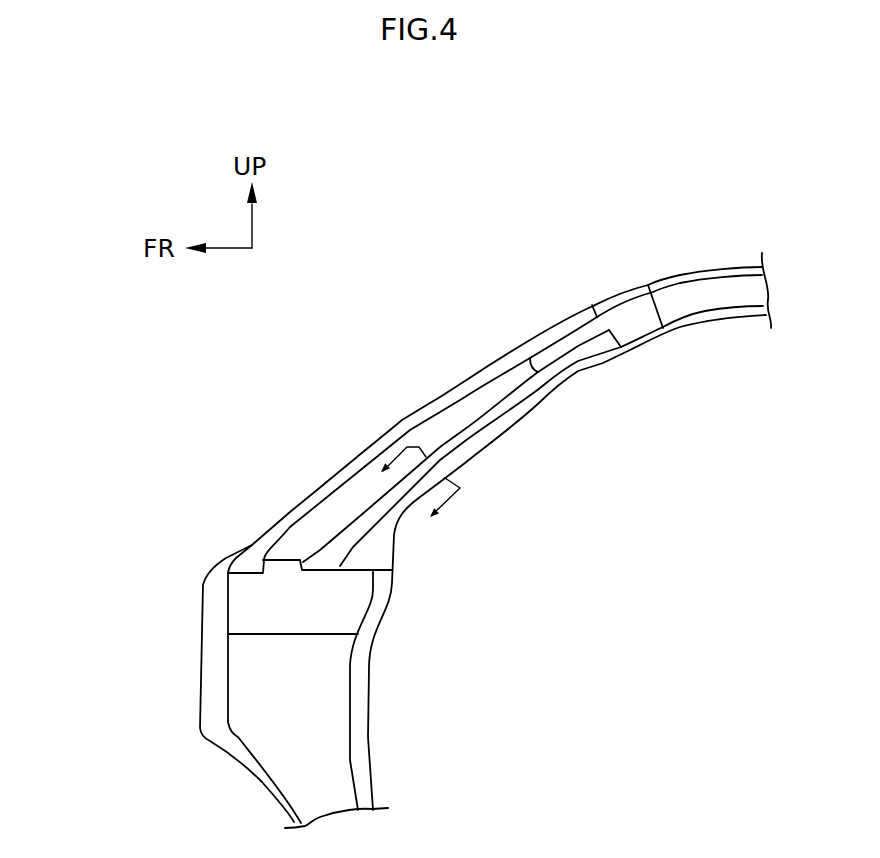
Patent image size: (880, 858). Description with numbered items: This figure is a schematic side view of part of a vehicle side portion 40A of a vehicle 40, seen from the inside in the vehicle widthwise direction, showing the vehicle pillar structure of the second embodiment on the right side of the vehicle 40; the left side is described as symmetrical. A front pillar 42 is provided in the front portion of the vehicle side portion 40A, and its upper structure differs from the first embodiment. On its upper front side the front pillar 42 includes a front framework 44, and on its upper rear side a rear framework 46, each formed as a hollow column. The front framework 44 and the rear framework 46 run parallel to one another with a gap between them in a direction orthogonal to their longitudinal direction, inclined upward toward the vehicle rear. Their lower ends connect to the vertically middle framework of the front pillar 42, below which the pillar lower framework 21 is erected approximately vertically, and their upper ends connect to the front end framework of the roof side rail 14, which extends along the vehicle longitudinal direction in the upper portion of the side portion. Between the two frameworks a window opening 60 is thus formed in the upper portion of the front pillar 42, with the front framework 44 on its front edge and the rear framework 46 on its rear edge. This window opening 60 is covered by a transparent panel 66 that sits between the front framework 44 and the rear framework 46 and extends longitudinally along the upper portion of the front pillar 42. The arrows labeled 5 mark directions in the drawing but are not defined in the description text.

The vehicle 40 is at (613, 193).
The vehicle side portion 40A is at (522, 251).
The roof side rail 14 is at (718, 266).
The front framework 44 is at (423, 410).
The rear framework 46 is at (472, 457).
The window opening 60 is at (465, 406).
The transparent panel 66 is at (488, 395).
The direction arrow 5 is at (398, 456).
The front pillar 42 is at (140, 581).
The pillar lower framework 21 is at (358, 777).